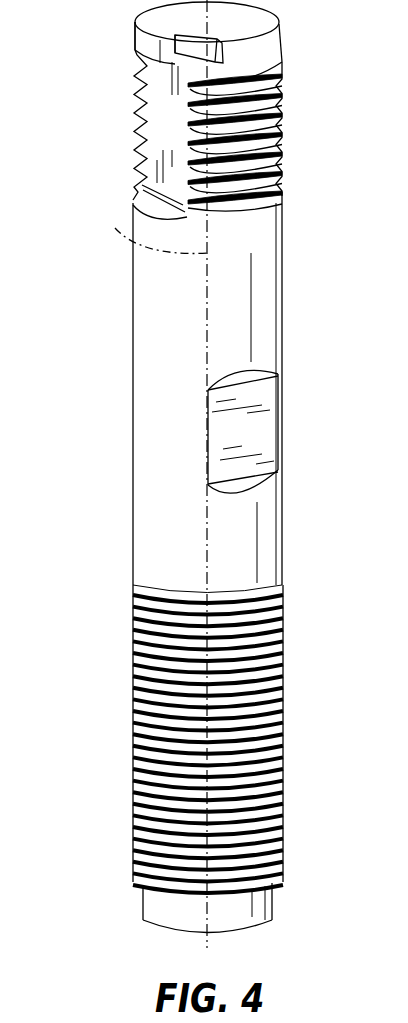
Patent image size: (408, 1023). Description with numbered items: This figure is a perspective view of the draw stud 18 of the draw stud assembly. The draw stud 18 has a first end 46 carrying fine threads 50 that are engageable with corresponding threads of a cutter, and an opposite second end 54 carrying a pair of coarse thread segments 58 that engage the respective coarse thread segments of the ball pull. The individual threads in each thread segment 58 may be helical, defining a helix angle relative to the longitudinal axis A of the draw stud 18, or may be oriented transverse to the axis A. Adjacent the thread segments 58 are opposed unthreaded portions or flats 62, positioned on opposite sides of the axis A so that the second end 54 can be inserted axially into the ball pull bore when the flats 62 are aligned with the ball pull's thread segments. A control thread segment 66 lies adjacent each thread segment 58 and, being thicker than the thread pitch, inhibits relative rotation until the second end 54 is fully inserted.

The draw stud 18 is at (201, 474).
The second end 54 is at (217, 117).
The coarse thread segments 58 is at (136, 141).
The flats 62 is at (203, 42).
The control thread segment 66 is at (274, 58).
The first end 46 is at (241, 739).
The fine threads 50 is at (268, 846).
The longitudinal axis A is at (152, 231).